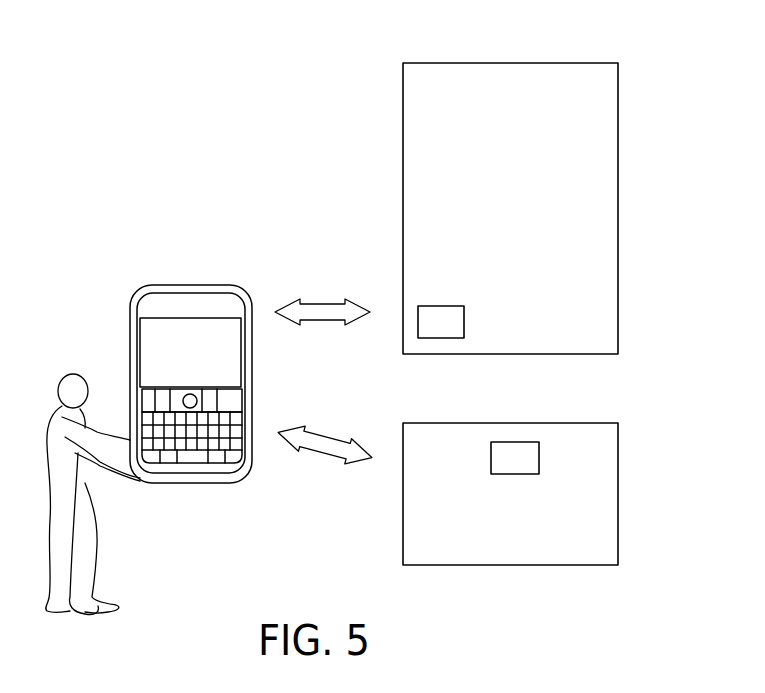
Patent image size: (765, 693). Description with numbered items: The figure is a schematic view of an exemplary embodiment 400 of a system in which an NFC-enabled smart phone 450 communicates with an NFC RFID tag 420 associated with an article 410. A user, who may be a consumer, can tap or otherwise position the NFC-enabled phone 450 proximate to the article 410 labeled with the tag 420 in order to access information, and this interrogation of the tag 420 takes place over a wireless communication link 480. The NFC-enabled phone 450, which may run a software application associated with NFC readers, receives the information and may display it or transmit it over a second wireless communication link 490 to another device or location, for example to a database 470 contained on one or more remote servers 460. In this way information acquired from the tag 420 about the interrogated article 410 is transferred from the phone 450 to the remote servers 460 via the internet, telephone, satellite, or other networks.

The exemplary embodiment 400 is at (322, 94).
The article 410 is at (603, 134).
The NFC RFID tag 420 is at (440, 322).
The NFC-enabled smart phone 450 is at (158, 286).
The remote server 460 is at (593, 495).
The database 470 is at (521, 452).
The wireless communication link 480 is at (327, 308).
The wireless communication link 490 is at (332, 445).